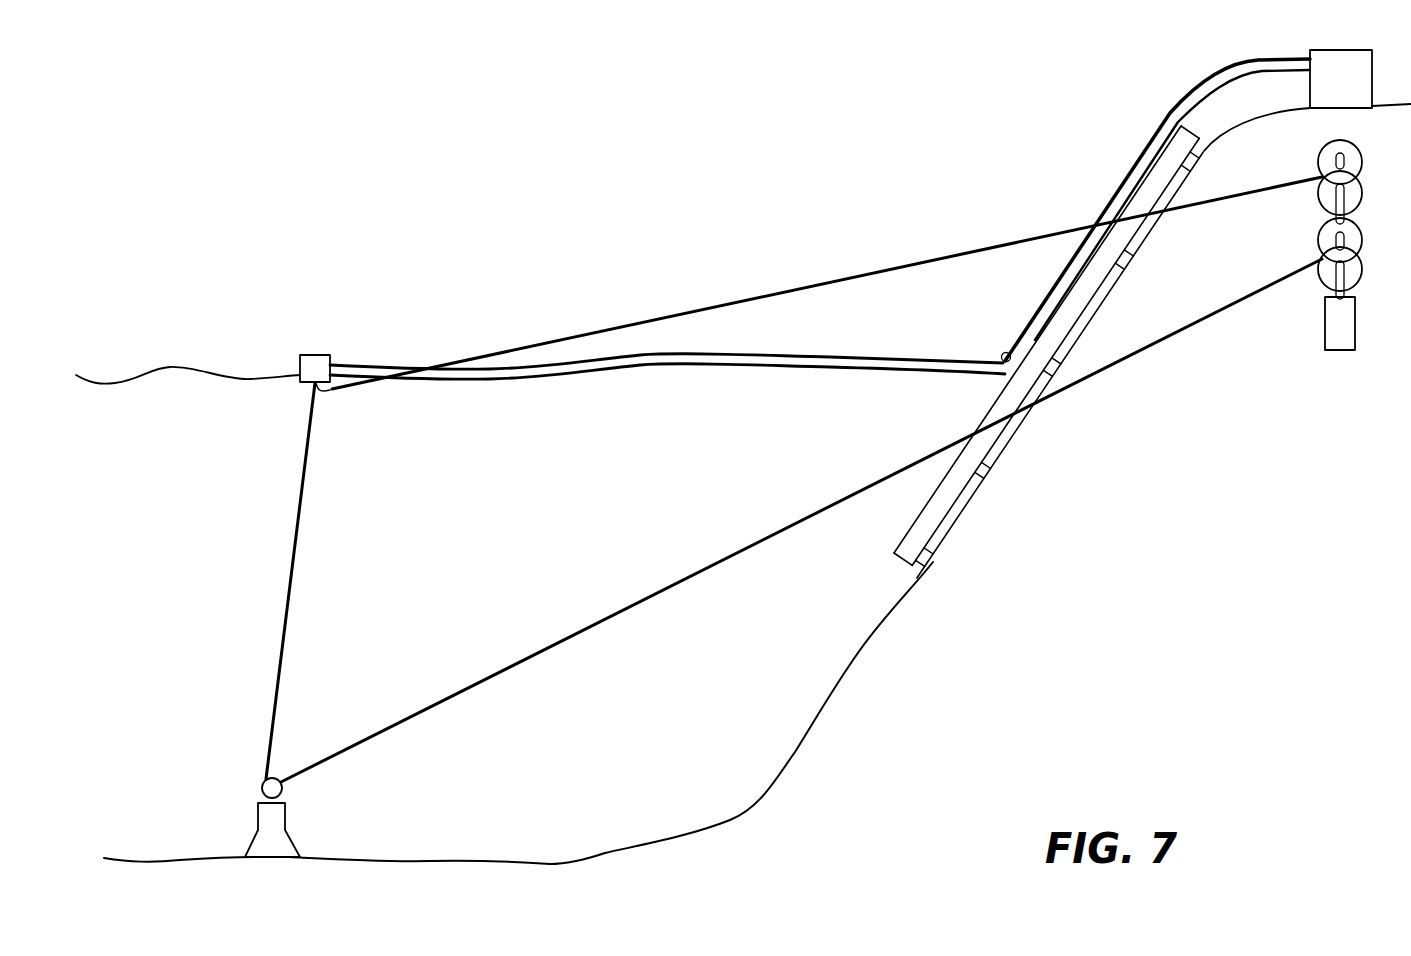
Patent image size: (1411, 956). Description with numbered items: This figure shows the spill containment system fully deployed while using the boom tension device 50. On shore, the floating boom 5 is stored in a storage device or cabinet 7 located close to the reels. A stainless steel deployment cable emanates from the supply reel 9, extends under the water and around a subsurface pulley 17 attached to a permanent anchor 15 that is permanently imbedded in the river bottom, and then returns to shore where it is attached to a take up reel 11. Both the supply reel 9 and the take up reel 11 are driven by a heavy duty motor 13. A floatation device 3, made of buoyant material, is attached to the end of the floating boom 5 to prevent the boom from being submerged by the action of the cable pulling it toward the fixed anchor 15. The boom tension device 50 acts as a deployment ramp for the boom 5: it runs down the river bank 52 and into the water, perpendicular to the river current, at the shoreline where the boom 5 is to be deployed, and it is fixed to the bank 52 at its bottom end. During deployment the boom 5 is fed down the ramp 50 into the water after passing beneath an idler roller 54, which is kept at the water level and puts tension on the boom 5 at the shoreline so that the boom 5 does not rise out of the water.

The floatation device 3 is at (318, 355).
The floating boom 5 is at (830, 357).
The storage device or cabinet 7 is at (1322, 50).
The supply reel 9 is at (1318, 163).
The take up reel 11 is at (1318, 240).
The heavy duty motor 13 is at (1325, 330).
The permanent anchor 15 is at (287, 818).
The subsurface pulley 17 is at (284, 776).
The boom tension device 50 is at (962, 512).
The river bank 52 is at (873, 638).
The idler roller 54 is at (1003, 356).